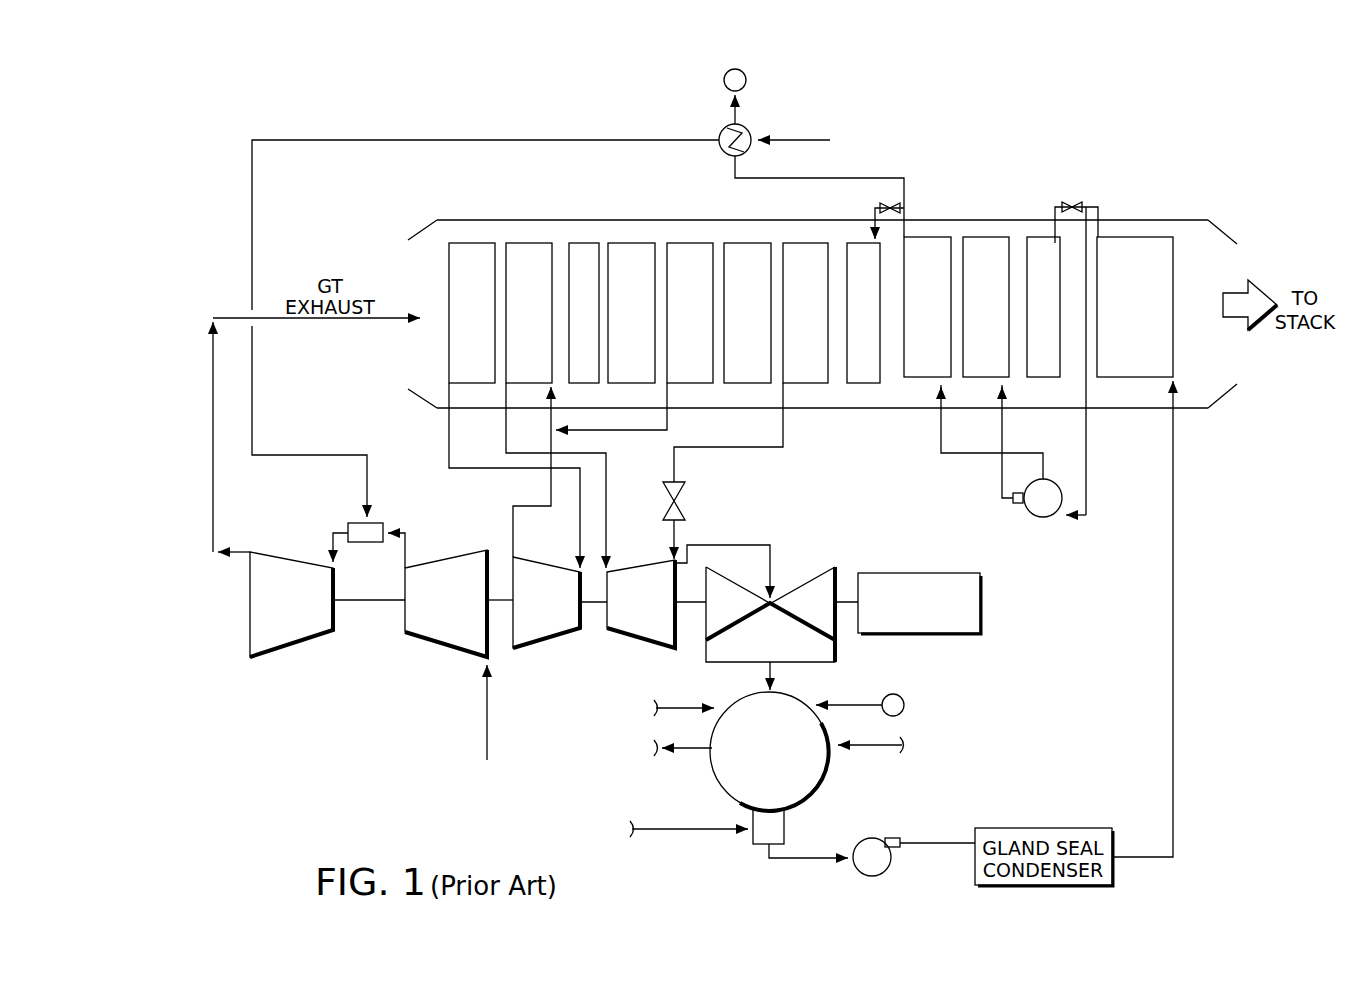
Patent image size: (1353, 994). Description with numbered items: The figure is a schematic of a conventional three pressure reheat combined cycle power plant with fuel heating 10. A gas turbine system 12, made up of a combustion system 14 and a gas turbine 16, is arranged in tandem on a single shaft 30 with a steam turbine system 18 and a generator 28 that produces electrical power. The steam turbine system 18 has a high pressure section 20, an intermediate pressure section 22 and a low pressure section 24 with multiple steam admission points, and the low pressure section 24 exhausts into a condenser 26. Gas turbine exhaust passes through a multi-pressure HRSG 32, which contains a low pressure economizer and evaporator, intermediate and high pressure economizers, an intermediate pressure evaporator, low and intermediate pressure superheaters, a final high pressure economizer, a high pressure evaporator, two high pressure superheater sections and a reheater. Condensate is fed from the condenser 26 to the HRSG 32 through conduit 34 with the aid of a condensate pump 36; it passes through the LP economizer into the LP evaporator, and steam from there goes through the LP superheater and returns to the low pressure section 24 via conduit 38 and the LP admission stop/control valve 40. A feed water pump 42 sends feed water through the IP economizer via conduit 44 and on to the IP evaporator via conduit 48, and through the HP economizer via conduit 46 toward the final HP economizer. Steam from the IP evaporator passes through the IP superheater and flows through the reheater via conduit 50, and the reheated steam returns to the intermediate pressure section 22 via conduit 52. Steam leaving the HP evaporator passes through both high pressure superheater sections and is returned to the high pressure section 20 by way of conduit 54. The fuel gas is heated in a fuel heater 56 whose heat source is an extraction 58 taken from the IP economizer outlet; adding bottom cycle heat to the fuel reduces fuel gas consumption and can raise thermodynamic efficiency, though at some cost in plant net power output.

The combined cycle power plant with fuel heating 10 is at (1140, 135).
The gas turbine system 12 is at (399, 645).
The combustion system 14 is at (382, 520).
The gas turbine 16 is at (317, 665).
The steam turbine system 18 is at (685, 637).
The high pressure section 20 is at (531, 563).
The intermediate pressure section 22 is at (661, 566).
The low pressure section 24 is at (816, 574).
The condenser 26 is at (822, 781).
The generator 28 is at (922, 572).
The single shaft 30 is at (493, 606).
The multi-pressure HRSG 32 is at (812, 418).
The conduit 34 is at (1176, 611).
The condensate pump 36 is at (872, 848).
The conduit 38 is at (770, 450).
The LP admission stop/control valve 40 is at (692, 504).
The feed water pump 42 is at (1058, 525).
The conduit 44 is at (958, 457).
The conduit 46 is at (1003, 433).
The conduit 48 is at (872, 208).
The conduit 50 is at (668, 426).
The conduit 52 is at (606, 460).
The conduit 54 is at (450, 437).
The fuel heater 56 is at (752, 128).
The extraction 58 is at (905, 190).